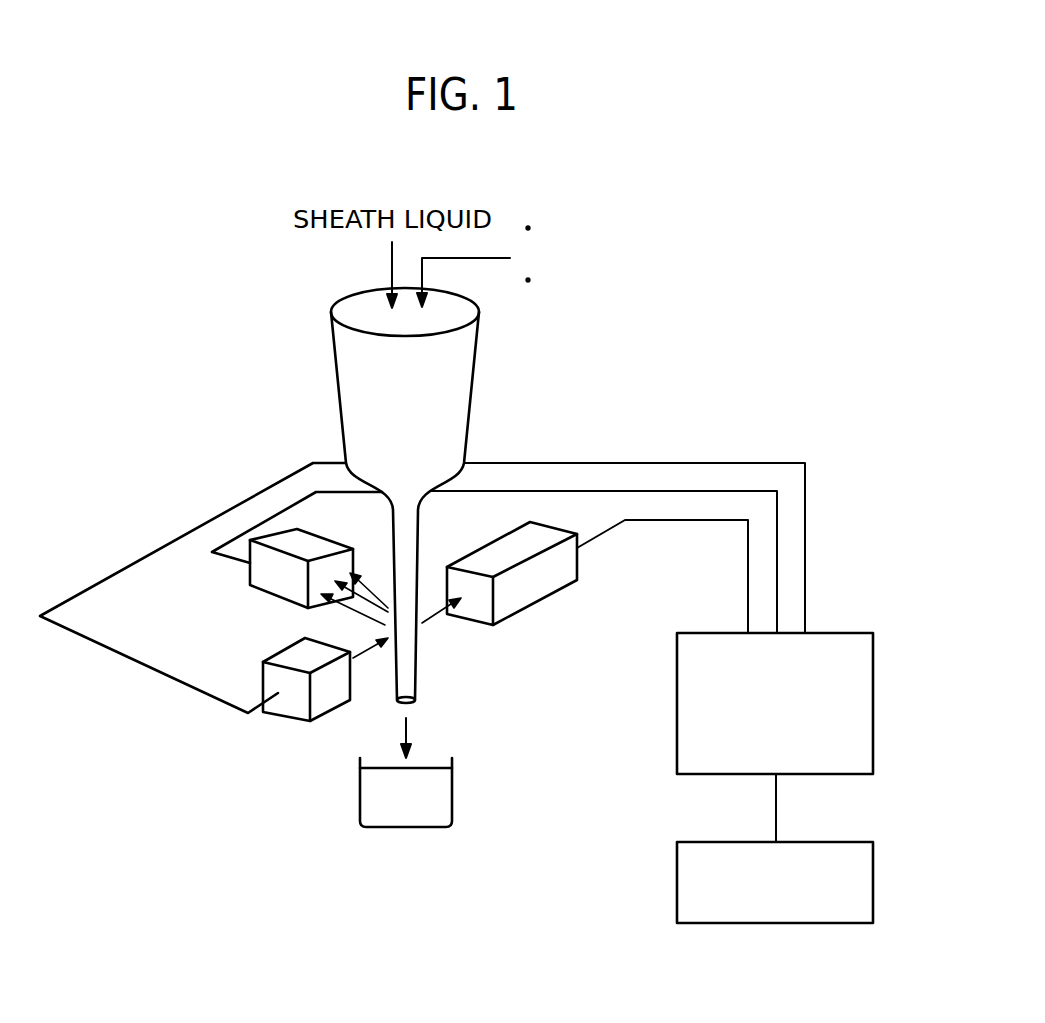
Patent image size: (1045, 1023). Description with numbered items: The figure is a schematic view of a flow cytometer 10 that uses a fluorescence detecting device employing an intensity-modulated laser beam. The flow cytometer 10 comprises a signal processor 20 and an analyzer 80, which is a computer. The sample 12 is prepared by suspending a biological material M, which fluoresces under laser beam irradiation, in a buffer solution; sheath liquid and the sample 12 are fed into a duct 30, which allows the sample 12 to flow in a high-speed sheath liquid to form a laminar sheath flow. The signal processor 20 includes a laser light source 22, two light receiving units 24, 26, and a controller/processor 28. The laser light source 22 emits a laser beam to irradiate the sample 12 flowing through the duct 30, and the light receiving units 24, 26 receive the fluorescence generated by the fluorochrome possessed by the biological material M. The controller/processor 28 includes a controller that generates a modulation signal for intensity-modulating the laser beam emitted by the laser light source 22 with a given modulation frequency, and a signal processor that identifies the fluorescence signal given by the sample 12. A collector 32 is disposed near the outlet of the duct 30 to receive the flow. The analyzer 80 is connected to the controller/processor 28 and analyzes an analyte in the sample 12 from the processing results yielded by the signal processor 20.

The flow cytometer 10 is at (240, 890).
The sample 12 is at (886, 208).
The signal processor 20 is at (511, 706).
The laser light source 22 is at (278, 713).
The light receiving unit 24 is at (540, 603).
The light receiving unit 26 is at (260, 593).
The controller/processor 28 is at (845, 632).
The duct 30 is at (418, 531).
The collector 32 is at (404, 830).
The analyzer 80 is at (777, 925).